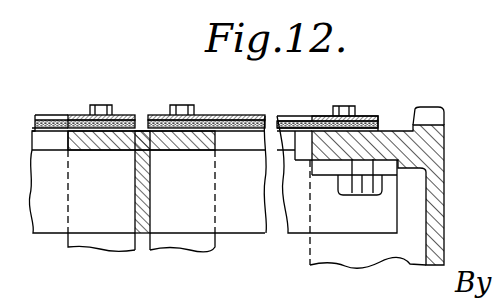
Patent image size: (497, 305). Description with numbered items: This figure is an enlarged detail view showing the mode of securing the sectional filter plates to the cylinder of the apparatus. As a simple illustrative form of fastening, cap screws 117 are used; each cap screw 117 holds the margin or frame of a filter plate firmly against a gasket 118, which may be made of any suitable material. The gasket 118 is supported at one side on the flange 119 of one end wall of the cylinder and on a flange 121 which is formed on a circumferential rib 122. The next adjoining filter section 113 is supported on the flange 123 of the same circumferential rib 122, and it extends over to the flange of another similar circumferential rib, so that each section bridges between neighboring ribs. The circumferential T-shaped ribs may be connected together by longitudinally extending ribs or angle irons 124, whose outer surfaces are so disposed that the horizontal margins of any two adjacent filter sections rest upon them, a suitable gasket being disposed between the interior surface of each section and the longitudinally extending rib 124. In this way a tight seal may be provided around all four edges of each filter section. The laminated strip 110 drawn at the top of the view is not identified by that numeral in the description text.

The laminated strip 110 is at (382, 128).
The filter section 113 is at (84, 92).
The cap screw 117 is at (176, 115).
The gasket 118 is at (380, 133).
The flange 119 is at (428, 176).
The flange 121 is at (165, 151).
The circumferential rib 122 is at (203, 222).
The flange 123 is at (118, 151).
The longitudinally extending rib 124 is at (95, 222).